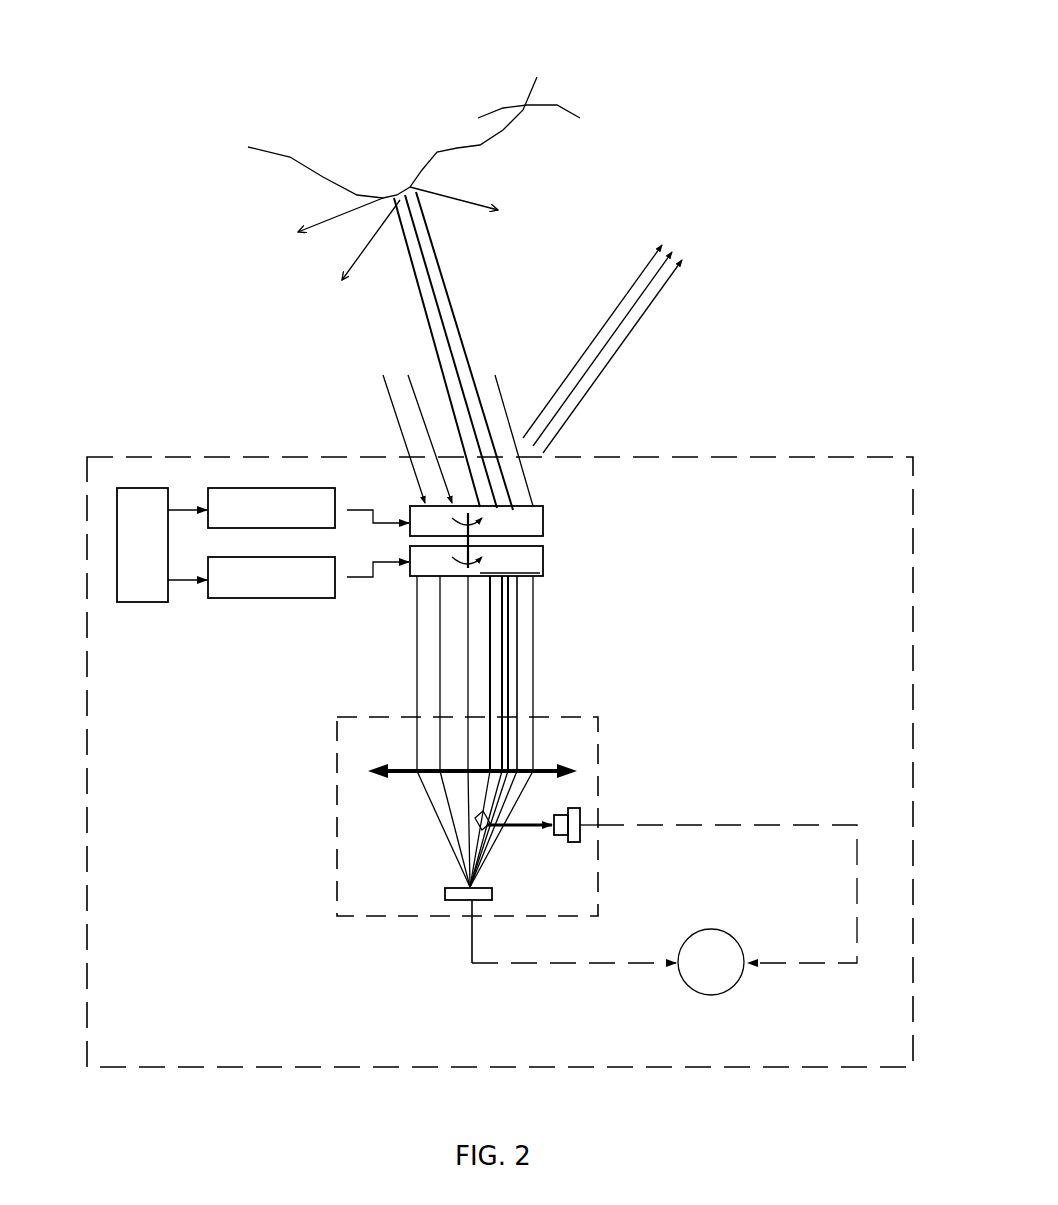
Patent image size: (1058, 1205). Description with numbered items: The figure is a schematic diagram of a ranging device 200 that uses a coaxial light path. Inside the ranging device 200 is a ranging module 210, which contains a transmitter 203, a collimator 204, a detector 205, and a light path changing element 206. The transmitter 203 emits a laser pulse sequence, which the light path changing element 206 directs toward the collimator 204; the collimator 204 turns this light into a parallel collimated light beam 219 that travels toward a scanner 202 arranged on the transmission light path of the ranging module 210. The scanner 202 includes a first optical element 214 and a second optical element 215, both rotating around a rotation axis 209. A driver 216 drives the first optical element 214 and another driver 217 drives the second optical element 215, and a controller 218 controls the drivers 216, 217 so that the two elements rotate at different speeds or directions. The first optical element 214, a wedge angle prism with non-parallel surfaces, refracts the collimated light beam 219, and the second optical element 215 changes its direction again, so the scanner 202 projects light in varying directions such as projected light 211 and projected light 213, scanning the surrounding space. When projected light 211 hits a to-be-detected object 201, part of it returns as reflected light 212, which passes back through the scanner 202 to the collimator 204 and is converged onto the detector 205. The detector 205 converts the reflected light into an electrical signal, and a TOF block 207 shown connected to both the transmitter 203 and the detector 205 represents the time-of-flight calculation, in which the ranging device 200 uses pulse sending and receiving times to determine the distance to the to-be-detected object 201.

The ranging device 200 is at (232, 457).
The to-be-detected object 201 is at (581, 118).
The scanner 202 is at (558, 522).
The transmitter 203 is at (575, 808).
The collimator 204 is at (415, 767).
The detector 205 is at (445, 888).
The light path changing element 206 is at (484, 828).
The time-of-flight module 207 is at (737, 982).
The rotation axis 209 is at (480, 540).
The ranging module 210 is at (598, 743).
The projected light 211 is at (450, 288).
The reflected light 212 is at (398, 385).
The projected light 213 is at (627, 340).
The first optical element 214 is at (500, 569).
The second optical element 215 is at (512, 527).
The driver 216 is at (292, 598).
The driver 217 is at (283, 488).
The controller 218 is at (152, 602).
The collimated light beam 219 is at (522, 665).